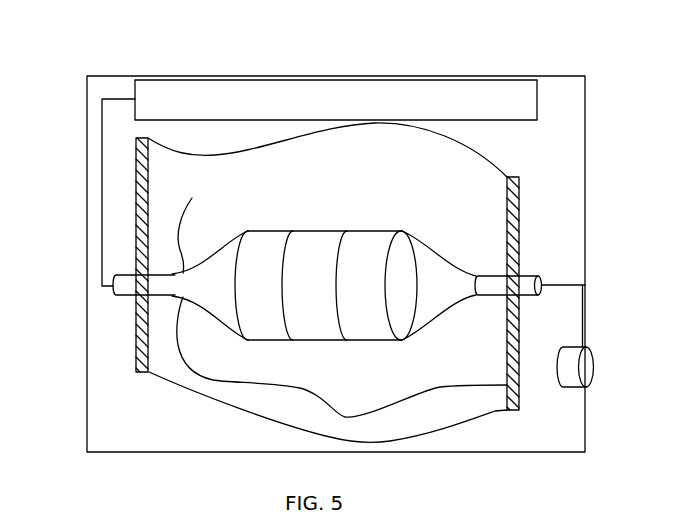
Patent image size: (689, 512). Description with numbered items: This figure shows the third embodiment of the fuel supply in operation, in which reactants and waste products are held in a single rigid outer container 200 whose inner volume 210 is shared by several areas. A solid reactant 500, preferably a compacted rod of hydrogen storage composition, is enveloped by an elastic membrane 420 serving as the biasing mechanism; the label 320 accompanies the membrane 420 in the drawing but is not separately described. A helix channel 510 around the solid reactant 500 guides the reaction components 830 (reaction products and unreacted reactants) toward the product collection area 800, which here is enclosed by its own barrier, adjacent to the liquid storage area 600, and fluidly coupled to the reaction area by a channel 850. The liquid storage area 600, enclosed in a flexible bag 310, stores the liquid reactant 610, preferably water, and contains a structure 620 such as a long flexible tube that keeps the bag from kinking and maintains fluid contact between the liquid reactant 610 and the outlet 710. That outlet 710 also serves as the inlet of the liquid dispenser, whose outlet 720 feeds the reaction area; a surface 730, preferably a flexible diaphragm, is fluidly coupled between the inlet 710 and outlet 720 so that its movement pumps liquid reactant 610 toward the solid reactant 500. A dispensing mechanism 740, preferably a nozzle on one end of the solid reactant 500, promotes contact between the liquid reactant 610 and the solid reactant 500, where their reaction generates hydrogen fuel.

The outer container 200 is at (545, 76).
The inner volume 210 is at (228, 76).
The flexible bag 310 is at (107, 76).
The coil 320 is at (350, 249).
The elastic membrane 420 is at (358, 230).
The solid reactant 500 is at (324, 272).
The helix channel 510 is at (340, 317).
The liquid storage area 600 is at (160, 452).
The liquid reactant 610 is at (476, 212).
The structure 620 is at (186, 366).
The outlet 710 is at (520, 392).
The outlet 720 is at (565, 285).
The surface 730 is at (594, 383).
The dispensing mechanism 740 is at (520, 264).
The product collection area 800 is at (336, 68).
The reaction components 830 is at (356, 111).
The channel 850 is at (102, 242).